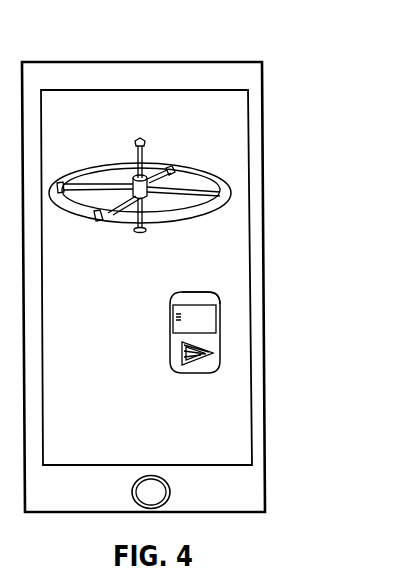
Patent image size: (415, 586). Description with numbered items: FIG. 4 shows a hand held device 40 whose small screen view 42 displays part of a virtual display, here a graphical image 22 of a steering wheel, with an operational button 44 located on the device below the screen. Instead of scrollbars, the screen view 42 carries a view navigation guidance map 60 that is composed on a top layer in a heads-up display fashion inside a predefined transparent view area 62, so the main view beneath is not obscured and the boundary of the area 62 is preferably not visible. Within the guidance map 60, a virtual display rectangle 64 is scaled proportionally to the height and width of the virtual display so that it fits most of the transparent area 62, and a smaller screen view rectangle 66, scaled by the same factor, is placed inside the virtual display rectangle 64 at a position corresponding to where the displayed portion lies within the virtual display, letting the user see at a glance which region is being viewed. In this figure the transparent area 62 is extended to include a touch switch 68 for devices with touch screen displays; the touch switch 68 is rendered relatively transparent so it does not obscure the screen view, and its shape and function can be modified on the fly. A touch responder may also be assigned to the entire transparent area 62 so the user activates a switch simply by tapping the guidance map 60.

The hand held device 40 is at (141, 62).
The screen view 42 is at (85, 108).
The operational button 44 is at (133, 487).
The graphical image 22 is at (120, 168).
The view navigation guidance map 60 is at (205, 300).
The transparent view area 62 is at (173, 296).
The virtual display rectangle 64 is at (207, 333).
The screen view rectangle 66 is at (178, 317).
The touch switch 68 is at (192, 362).